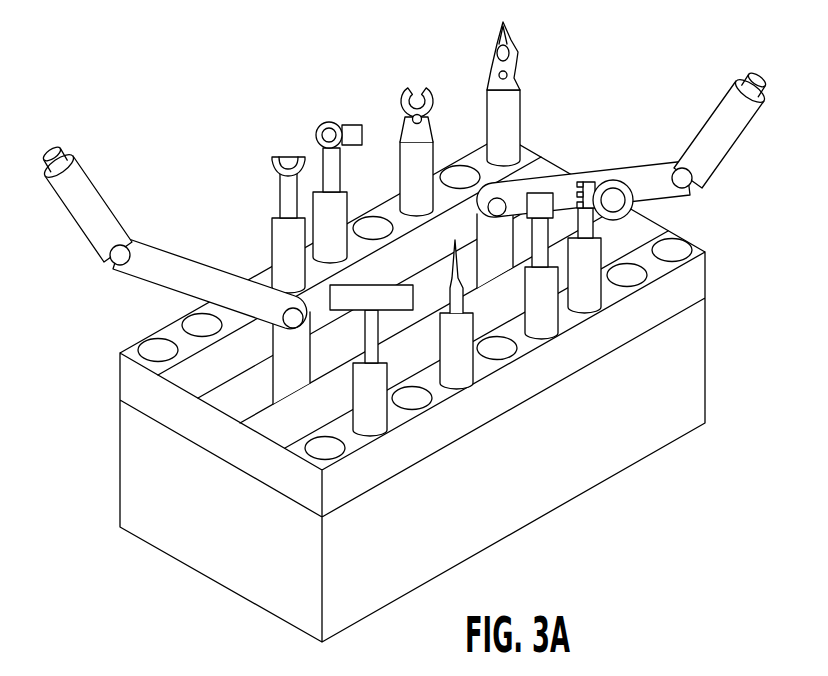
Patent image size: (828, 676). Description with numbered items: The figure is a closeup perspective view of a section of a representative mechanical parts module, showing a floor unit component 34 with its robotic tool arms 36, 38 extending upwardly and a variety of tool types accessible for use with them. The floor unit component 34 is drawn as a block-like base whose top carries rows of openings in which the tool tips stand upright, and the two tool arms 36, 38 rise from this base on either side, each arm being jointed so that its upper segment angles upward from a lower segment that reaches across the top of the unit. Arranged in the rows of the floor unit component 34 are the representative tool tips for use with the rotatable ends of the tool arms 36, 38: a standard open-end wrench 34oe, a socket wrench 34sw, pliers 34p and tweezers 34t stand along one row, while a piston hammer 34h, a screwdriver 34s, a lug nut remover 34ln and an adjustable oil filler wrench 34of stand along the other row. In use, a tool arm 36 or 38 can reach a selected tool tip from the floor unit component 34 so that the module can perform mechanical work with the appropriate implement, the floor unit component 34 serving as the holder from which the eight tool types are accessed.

The floor unit component 34 is at (519, 497).
The standard open-end wrench 34oe is at (282, 233).
The socket wrench 34sw is at (328, 203).
The pliers 34p is at (427, 132).
The tweezers 34t is at (514, 102).
The piston hammer 34h is at (372, 428).
The screwdriver 34s is at (457, 372).
The lug nut remover 34ln is at (538, 332).
The adjustable oil filler wrench 34of is at (592, 298).
The tool arm 36 is at (722, 147).
The tool arm 38 is at (92, 201).